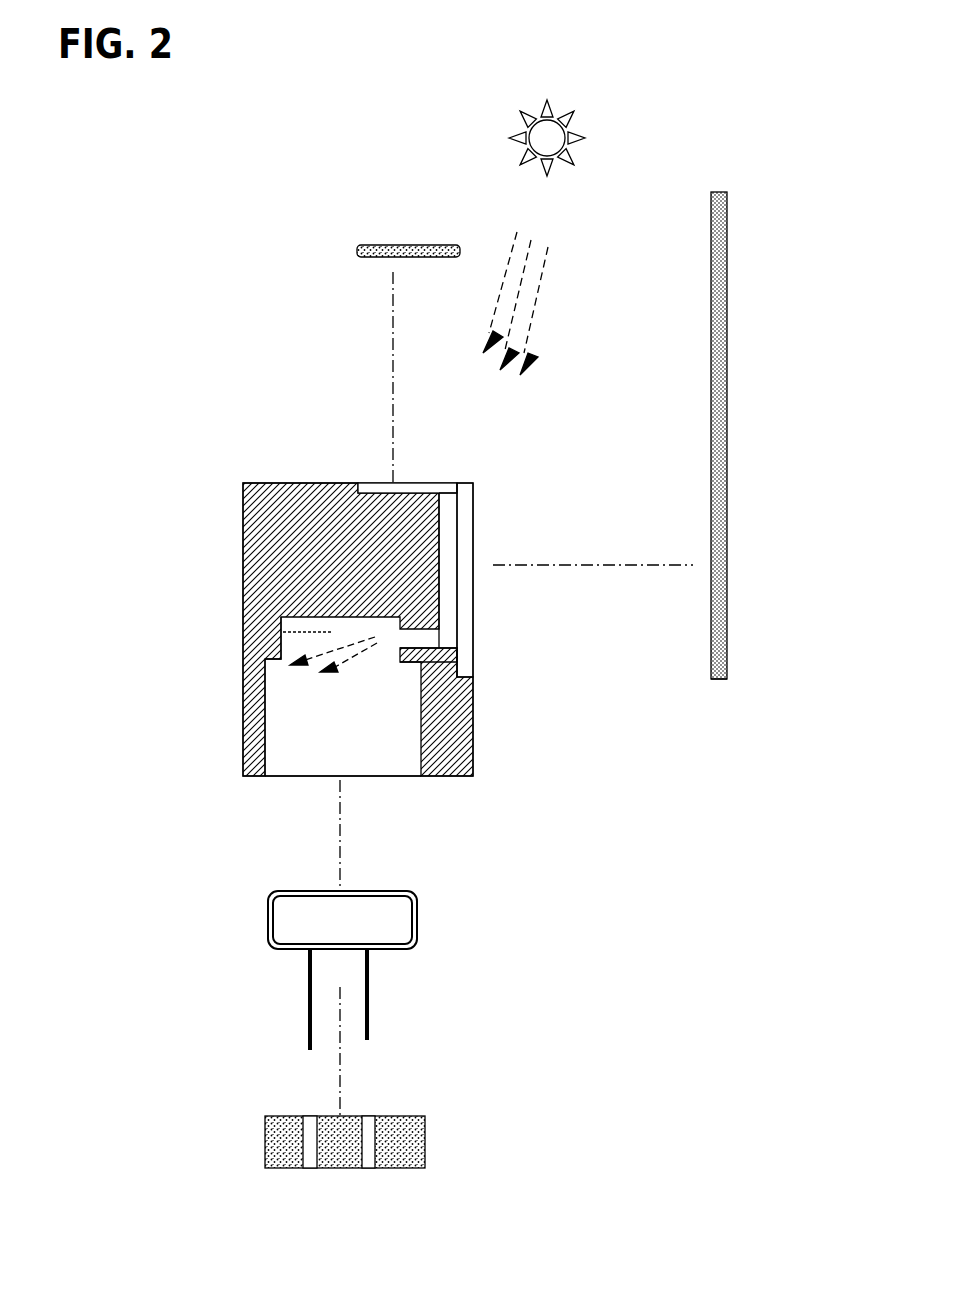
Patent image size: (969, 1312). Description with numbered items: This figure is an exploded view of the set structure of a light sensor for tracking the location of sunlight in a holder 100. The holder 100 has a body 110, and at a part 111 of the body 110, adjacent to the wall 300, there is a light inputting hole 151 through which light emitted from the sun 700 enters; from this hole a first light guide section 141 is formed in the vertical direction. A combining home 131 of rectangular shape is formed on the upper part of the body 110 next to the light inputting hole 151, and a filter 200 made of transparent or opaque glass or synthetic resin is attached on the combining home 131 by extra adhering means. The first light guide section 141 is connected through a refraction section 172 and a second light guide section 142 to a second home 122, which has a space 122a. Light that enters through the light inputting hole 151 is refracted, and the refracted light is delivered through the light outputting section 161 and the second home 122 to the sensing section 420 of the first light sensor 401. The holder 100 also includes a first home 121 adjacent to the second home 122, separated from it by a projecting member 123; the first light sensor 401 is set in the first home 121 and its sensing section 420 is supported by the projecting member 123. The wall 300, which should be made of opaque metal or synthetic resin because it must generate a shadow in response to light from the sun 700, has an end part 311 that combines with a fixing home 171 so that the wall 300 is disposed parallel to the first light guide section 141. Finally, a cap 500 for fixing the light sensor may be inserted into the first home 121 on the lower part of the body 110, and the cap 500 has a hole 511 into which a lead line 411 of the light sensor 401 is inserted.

The holder 100 is at (236, 453).
The body 110 is at (243, 580).
The part of the body 111 is at (473, 742).
The first home 121 is at (282, 733).
The second home 122 is at (243, 645).
The space 122a is at (283, 632).
The projecting member 123 is at (275, 663).
The combining home 131 is at (378, 484).
The first light guide section 141 is at (447, 557).
The second light guide section 142 is at (418, 643).
The light inputting hole 151 is at (450, 509).
The light outputting section 161 is at (396, 639).
The fixing home 171 is at (462, 672).
The refraction section 172 is at (448, 638).
The filter 200 is at (418, 245).
The wall 300 is at (727, 372).
The end part of the wall 311 is at (717, 682).
The first light sensor 401 is at (397, 923).
The lead line 411 is at (371, 1003).
The sensing section 420 is at (383, 891).
The cap 500 is at (410, 1142).
The hole 511 is at (366, 1168).
The sun 700 is at (577, 127).